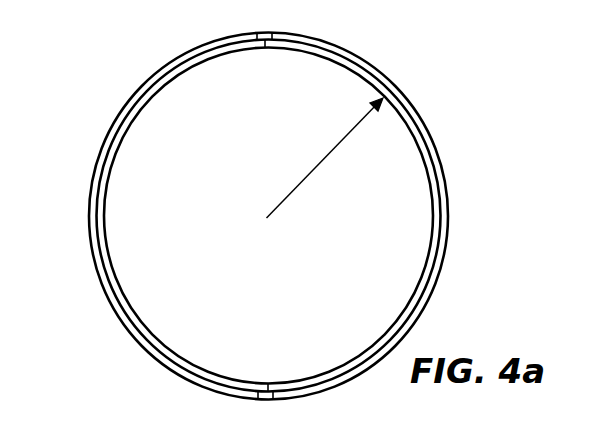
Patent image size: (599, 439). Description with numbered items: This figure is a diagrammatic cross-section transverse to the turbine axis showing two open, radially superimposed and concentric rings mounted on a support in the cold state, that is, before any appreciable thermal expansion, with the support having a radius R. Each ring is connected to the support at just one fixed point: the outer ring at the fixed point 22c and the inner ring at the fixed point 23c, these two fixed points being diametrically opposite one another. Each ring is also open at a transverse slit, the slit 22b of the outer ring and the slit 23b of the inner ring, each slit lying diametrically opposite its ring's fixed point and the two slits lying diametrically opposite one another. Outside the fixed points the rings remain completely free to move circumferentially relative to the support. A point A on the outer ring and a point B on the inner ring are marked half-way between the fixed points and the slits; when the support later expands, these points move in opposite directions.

The point on the ring A is at (89, 212).
The point on the ring B is at (103, 222).
The radius R is at (325, 158).
The fixed point 22c is at (262, 38).
The transverse slit 23b is at (272, 33).
The transverse slit 22b is at (257, 397).
The fixed point 23c is at (268, 398).